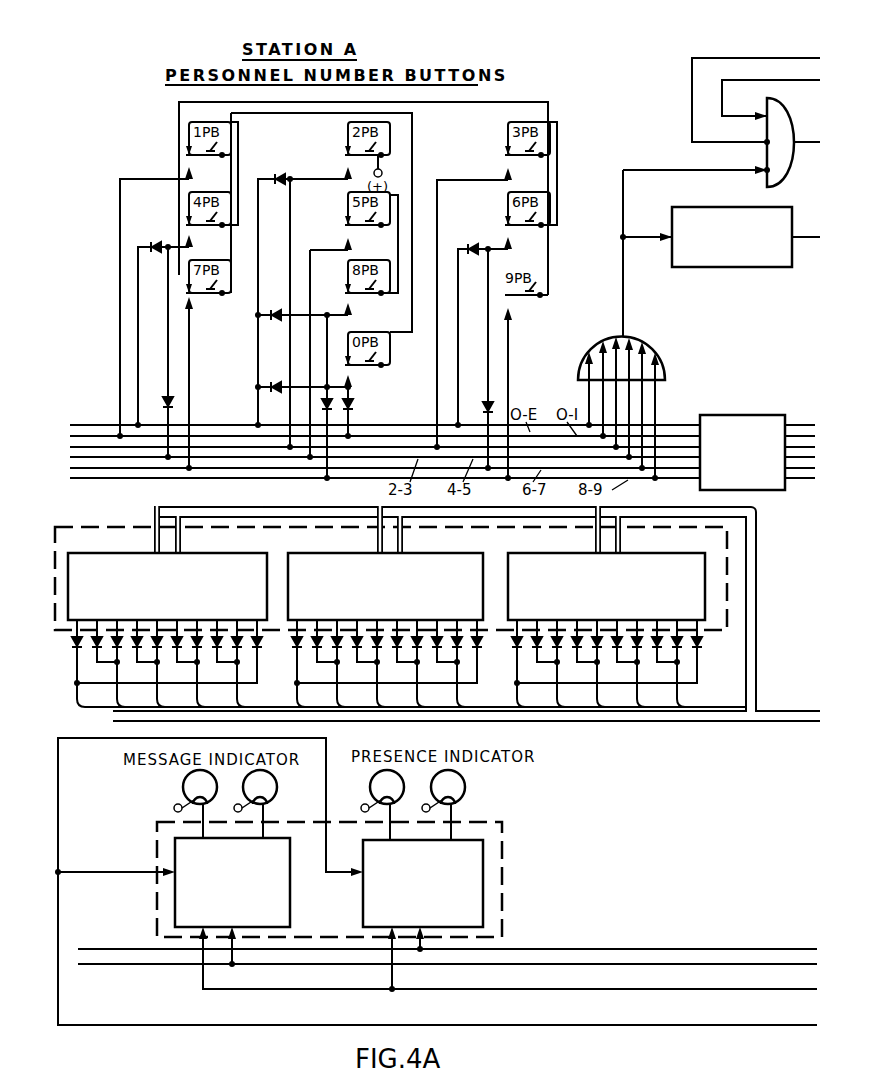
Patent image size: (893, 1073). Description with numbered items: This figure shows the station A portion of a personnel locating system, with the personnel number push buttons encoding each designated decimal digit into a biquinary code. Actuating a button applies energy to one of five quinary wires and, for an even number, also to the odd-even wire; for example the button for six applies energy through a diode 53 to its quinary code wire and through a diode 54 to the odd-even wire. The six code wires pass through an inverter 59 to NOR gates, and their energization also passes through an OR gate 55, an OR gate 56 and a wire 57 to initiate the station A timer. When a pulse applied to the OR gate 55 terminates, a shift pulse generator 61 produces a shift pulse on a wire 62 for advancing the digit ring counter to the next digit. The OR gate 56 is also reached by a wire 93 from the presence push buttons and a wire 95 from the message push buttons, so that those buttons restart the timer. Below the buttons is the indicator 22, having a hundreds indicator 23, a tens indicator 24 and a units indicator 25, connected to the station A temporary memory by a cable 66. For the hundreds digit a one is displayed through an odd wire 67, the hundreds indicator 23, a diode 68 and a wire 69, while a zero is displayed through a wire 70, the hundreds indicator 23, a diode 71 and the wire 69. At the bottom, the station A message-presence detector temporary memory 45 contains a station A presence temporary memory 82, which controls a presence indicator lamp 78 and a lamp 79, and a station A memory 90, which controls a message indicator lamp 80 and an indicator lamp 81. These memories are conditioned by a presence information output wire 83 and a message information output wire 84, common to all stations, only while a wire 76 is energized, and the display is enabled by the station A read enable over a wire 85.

The indicator 22 is at (112, 527).
The hundreds indicator 23 is at (236, 554).
The tens indicator 24 is at (428, 554).
The units indicator 25 is at (659, 556).
The station A message-presence detector temporary memory 45 is at (503, 844).
The diode 53 is at (485, 403).
The diode 54 is at (476, 243).
The OR gate 55 is at (633, 352).
The OR gate 56 is at (786, 163).
The wire 57 is at (798, 143).
The inverter 59 is at (768, 415).
The shift pulse generator 61 is at (765, 268).
The wire 62 is at (800, 237).
The cable 66 is at (762, 709).
The odd wire 67 is at (154, 546).
The diode 68 is at (72, 646).
The wire 69 is at (76, 690).
The wire 70 is at (181, 544).
The diode 71 is at (260, 650).
The wire 76 is at (673, 990).
The presence indicator lamp 78 is at (464, 796).
The lamp 79 is at (374, 792).
The message indicator lamp 80 is at (270, 796).
The indicator lamp 81 is at (185, 790).
The station A presence temporary memory 82 is at (487, 894).
The presence information output wire 83 is at (675, 950).
The message information output wire 84 is at (702, 965).
The wire 85 is at (757, 1026).
The station A memory 90 is at (292, 899).
The wire 93 is at (788, 80).
The wire 95 is at (773, 58).